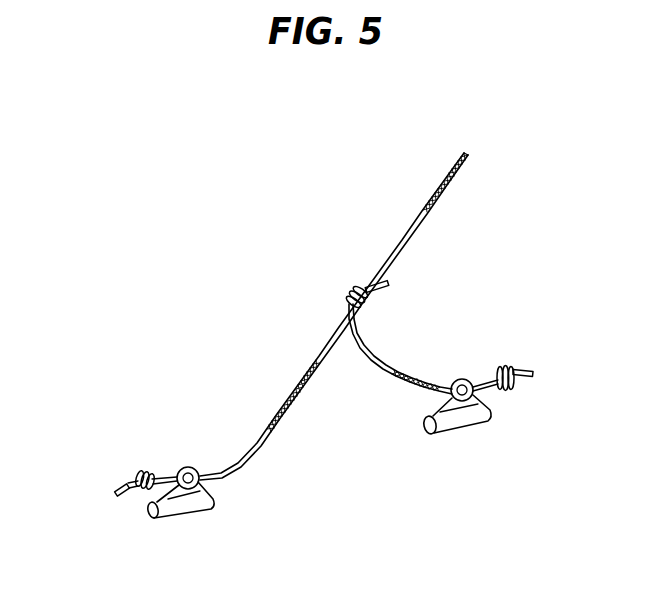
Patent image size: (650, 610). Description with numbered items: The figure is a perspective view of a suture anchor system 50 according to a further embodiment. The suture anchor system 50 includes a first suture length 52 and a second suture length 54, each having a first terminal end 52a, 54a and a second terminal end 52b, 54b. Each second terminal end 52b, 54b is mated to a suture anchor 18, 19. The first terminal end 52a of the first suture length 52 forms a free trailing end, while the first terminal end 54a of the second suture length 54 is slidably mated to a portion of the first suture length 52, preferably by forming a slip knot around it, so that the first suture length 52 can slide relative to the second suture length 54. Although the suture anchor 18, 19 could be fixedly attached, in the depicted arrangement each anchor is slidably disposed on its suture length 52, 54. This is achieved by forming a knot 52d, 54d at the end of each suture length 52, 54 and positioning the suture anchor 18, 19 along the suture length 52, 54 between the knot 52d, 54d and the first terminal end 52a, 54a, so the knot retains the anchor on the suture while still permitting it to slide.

The suture anchor system 50 is at (129, 207).
The first suture length 52 is at (318, 358).
The first terminal end of first suture length 52a is at (450, 180).
The second terminal end of first suture length 52b is at (114, 490).
The knot 52d is at (148, 468).
The second suture length 54 is at (381, 366).
The first terminal end of second suture length 54a is at (392, 285).
The second terminal end of second suture length 54b is at (535, 373).
The knot 54d is at (345, 293).
The suture anchor 18 is at (149, 540).
The suture anchor 19 is at (409, 447).